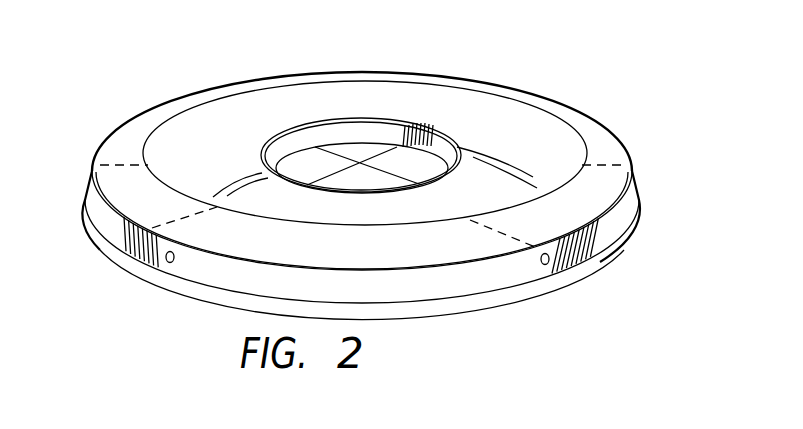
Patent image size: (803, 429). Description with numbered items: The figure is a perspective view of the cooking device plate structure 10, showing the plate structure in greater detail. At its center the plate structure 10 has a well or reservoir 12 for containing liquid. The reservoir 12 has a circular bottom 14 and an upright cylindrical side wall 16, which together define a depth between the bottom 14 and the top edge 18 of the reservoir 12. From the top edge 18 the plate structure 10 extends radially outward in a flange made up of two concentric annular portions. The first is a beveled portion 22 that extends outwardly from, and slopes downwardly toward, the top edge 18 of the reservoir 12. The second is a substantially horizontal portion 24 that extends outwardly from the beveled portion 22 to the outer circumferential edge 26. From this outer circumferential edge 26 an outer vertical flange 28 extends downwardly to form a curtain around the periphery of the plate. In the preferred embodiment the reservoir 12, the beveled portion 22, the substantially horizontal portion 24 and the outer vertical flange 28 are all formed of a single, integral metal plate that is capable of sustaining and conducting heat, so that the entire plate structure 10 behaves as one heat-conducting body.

The cooking device plate structure 10 is at (600, 106).
The reservoir 12 is at (353, 138).
The circular bottom 14 is at (400, 167).
The upright cylindrical side wall 16 is at (324, 137).
The top edge 18 is at (409, 107).
The first beveled portion 22 is at (203, 130).
The second substantially horizontal portion 24 is at (125, 145).
The outer circumferential edge 26 is at (490, 265).
The outer vertical flange 28 is at (613, 227).